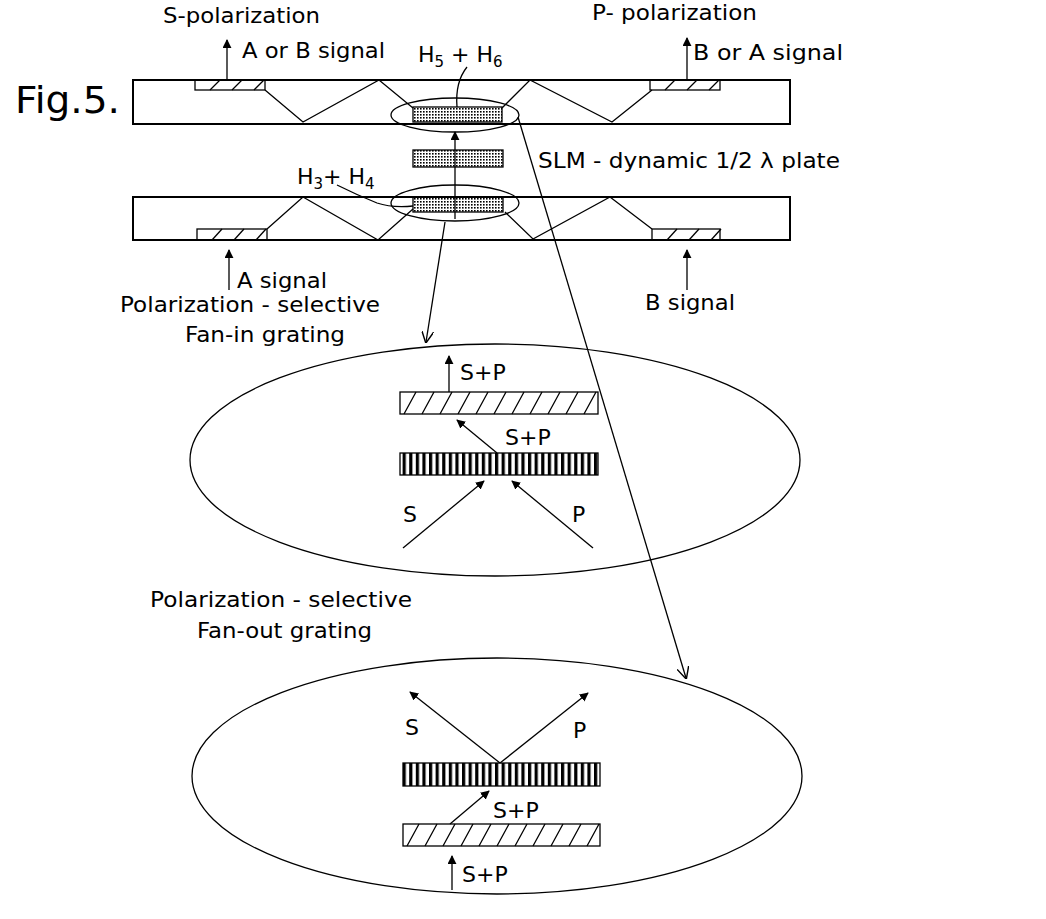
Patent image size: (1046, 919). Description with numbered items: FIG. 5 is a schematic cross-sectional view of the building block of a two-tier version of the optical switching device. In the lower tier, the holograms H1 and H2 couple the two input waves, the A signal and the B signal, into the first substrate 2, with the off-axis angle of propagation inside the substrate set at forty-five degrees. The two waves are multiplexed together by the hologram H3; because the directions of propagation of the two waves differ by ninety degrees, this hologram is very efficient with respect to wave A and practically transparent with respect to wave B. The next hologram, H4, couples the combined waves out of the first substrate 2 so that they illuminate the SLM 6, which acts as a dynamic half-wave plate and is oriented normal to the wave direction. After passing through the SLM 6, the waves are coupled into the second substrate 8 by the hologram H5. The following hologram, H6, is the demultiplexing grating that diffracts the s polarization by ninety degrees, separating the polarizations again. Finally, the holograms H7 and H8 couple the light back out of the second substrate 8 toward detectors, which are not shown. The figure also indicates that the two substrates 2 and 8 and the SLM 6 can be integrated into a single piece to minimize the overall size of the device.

The first substrate 2 is at (479, 218).
The second substrate 8 is at (477, 102).
The SLM 6 is at (413, 160).
The hologram H1 is at (203, 221).
The hologram H2 is at (714, 219).
The hologram H3 is at (526, 466).
The hologram H4 is at (526, 404).
The hologram H5 is at (517, 839).
The hologram H6 is at (517, 776).
The hologram H7 is at (202, 98).
The hologram H8 is at (713, 97).